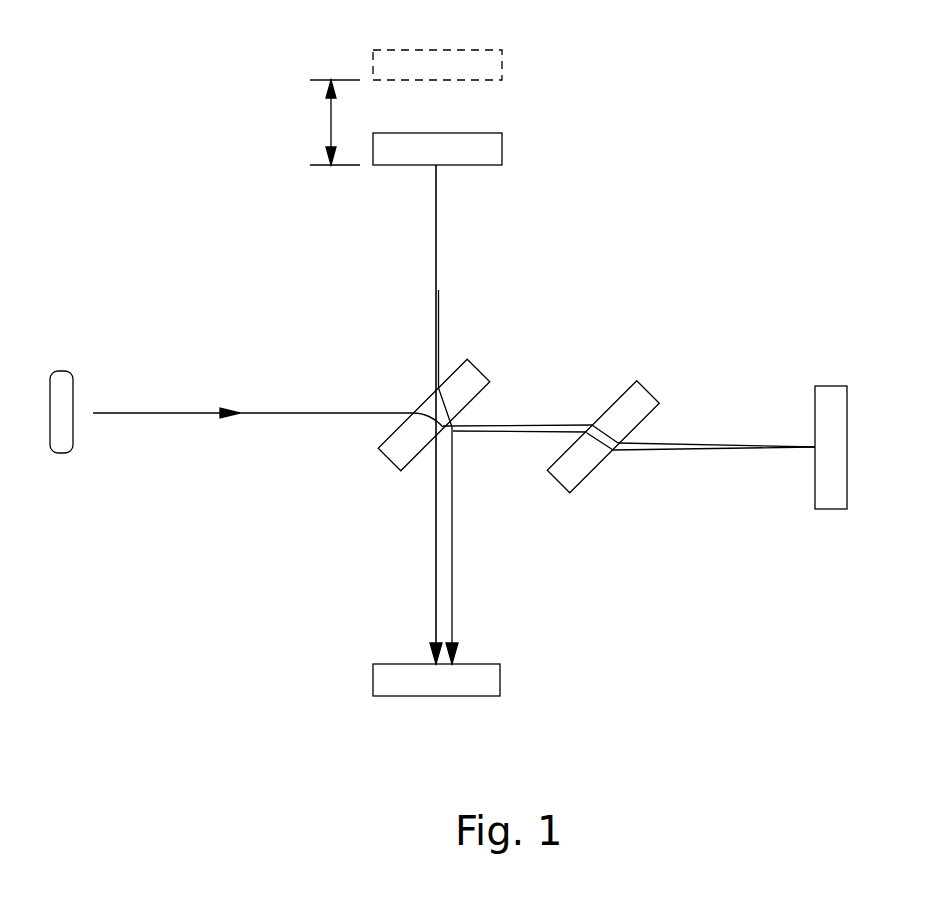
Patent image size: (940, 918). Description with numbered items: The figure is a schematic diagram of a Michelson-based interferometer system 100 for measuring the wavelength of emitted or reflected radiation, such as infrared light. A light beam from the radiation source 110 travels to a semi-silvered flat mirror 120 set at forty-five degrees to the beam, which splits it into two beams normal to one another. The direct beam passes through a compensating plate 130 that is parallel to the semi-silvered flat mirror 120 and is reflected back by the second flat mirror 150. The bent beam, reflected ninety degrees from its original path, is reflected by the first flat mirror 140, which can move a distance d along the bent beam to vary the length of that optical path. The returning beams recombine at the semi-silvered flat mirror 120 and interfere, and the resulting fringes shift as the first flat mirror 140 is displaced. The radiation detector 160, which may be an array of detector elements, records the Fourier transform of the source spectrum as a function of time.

The interferometer system 100 is at (790, 116).
The radiation source 110 is at (60, 371).
The semi-silvered flat mirror 120 is at (468, 360).
The compensating plate 130 is at (637, 381).
The first flat mirror 140 is at (502, 133).
The second flat mirror 150 is at (847, 386).
The radiation detector 160 is at (500, 664).